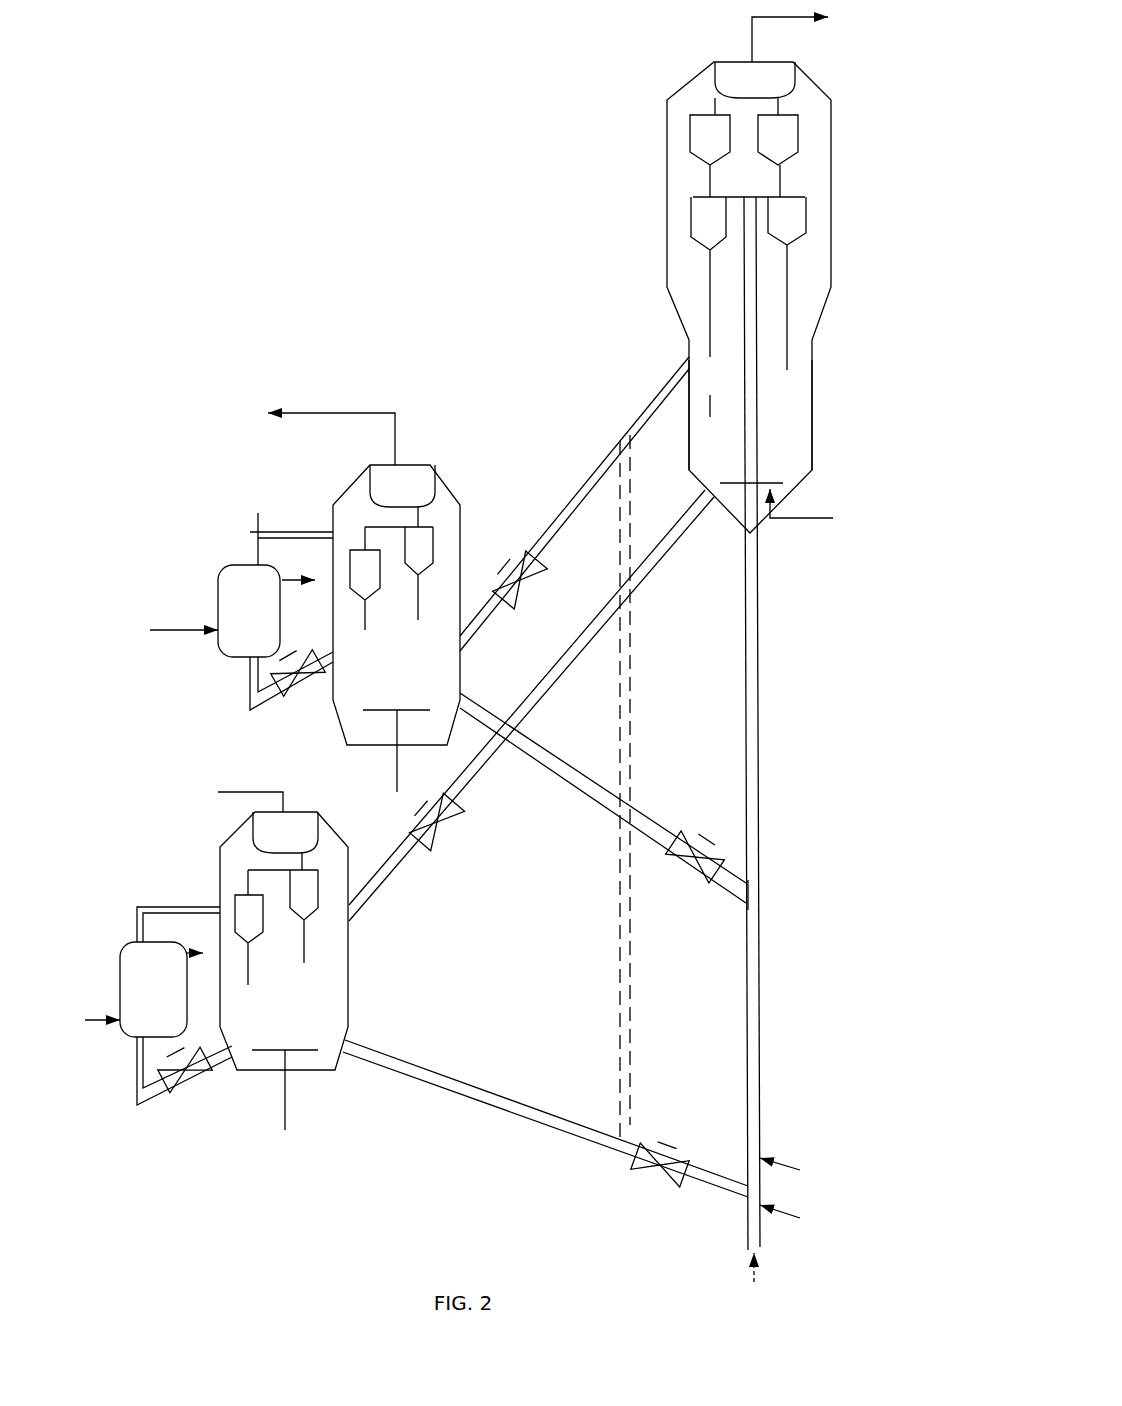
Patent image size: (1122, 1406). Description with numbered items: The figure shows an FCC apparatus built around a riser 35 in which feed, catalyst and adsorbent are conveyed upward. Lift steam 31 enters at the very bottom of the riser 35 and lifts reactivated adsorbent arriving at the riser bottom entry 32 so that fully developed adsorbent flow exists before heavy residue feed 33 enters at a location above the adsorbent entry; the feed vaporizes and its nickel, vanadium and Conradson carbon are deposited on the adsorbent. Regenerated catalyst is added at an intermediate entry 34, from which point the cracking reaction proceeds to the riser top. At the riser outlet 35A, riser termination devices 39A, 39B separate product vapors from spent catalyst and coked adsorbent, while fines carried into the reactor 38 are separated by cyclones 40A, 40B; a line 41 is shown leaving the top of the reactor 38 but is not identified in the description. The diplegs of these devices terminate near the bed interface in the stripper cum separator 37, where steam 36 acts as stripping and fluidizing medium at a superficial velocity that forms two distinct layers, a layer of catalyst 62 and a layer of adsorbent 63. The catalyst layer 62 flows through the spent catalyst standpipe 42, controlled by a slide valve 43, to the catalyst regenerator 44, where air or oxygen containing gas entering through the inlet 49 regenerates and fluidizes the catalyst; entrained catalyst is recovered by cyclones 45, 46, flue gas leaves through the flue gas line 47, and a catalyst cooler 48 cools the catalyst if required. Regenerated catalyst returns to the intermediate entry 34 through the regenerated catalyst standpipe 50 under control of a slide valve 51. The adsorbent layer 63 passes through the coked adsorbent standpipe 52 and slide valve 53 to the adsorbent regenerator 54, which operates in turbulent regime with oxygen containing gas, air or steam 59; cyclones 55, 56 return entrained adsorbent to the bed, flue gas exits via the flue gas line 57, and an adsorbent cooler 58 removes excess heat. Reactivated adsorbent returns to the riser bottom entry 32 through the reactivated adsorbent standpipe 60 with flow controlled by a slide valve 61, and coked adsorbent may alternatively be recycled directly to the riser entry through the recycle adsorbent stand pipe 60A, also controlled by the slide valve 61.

The lift steam 31 is at (759, 1285).
The riser bottom entry 32 is at (799, 1227).
The heavy residue feed 33 is at (799, 1172).
The intermediate entry 34 is at (777, 895).
The riser 35 is at (770, 785).
The riser outlet 35A is at (749, 186).
The steam 36 is at (819, 496).
The stripper cum separator 37 is at (812, 403).
The reactor 38 is at (831, 183).
The riser termination device 39A is at (708, 307).
The riser termination device 39B is at (786, 283).
The cyclone 40A is at (710, 147).
The cyclone 40B is at (778, 147).
The product vapor outlet 41 is at (817, 35).
The spent catalyst standpipe 42 is at (574, 504).
The slide valve 43 is at (508, 578).
The catalyst regenerator 44 is at (396, 605).
The cyclone 45 is at (365, 578).
The cyclone 46 is at (399, 563).
The flue gas line 47 is at (303, 423).
The catalyst cooler 48 is at (241, 611).
The inlet 49 is at (386, 757).
The regenerated catalyst standpipe 50 is at (603, 798).
The slide valve 51 is at (697, 837).
The coked adsorbent standpipe 52 is at (531, 705).
The slide valve 53 is at (442, 830).
The adsorbent regenerator 54 is at (284, 941).
The cyclone 55 is at (249, 927).
The cyclone 56 is at (283, 908).
The flue gas line 57 is at (222, 786).
The adsorbent cooler 58 is at (158, 1006).
The oxygen containing gas or air or steam 59 is at (285, 1107).
The reactivated adsorbent standpipe 60 is at (424, 1066).
The recycle adsorbent stand pipe 60A is at (600, 788).
The slide valve 61 is at (670, 1146).
The layer of catalyst 62 is at (713, 415).
The layer of adsorbent 63 is at (758, 466).